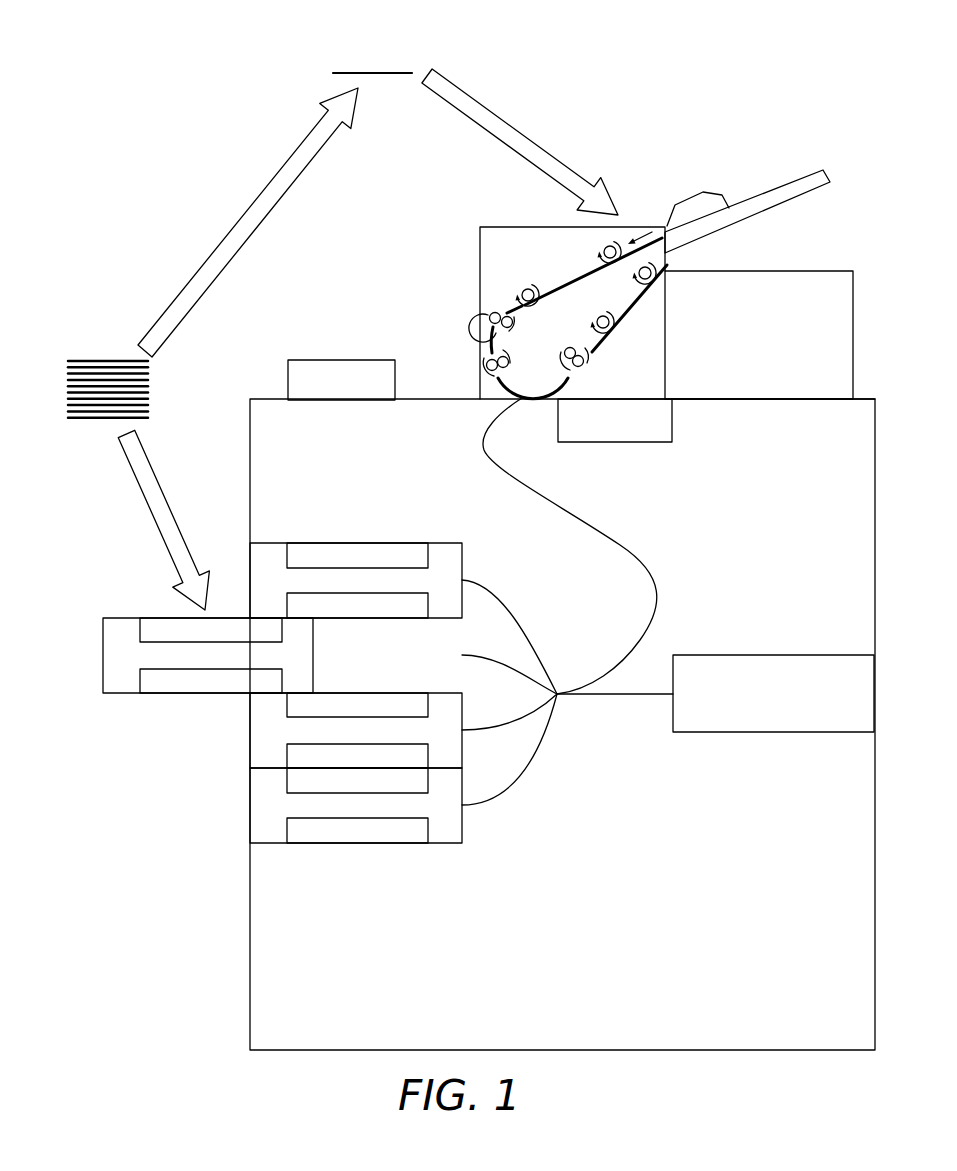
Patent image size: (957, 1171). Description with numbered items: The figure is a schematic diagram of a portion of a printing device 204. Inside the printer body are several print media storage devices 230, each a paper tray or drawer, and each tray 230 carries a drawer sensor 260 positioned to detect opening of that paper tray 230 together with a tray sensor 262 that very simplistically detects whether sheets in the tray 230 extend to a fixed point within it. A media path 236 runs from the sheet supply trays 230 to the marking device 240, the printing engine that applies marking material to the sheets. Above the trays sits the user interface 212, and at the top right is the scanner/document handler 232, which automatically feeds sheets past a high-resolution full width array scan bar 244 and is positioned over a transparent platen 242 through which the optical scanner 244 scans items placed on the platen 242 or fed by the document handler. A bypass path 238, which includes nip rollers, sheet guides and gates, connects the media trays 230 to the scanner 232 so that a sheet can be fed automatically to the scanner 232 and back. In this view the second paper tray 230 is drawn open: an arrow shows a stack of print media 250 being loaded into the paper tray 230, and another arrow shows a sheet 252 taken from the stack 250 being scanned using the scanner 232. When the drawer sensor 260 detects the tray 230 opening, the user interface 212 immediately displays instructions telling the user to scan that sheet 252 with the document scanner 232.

The printing device 204 is at (250, 932).
The user interface 212 is at (335, 358).
The print media storage device 230 is at (463, 556).
The document scanner 232 is at (814, 270).
The media path 236 is at (607, 694).
The bypass path 238 is at (490, 458).
The marking device 240 is at (808, 655).
The transparent platen 242 is at (717, 401).
The full width array scan bar 244 is at (630, 444).
The stack of print media 250 is at (107, 358).
The sheet of print media 252 is at (373, 72).
The drawer sensor 260 is at (284, 668).
The tray sensor 262 is at (284, 718).